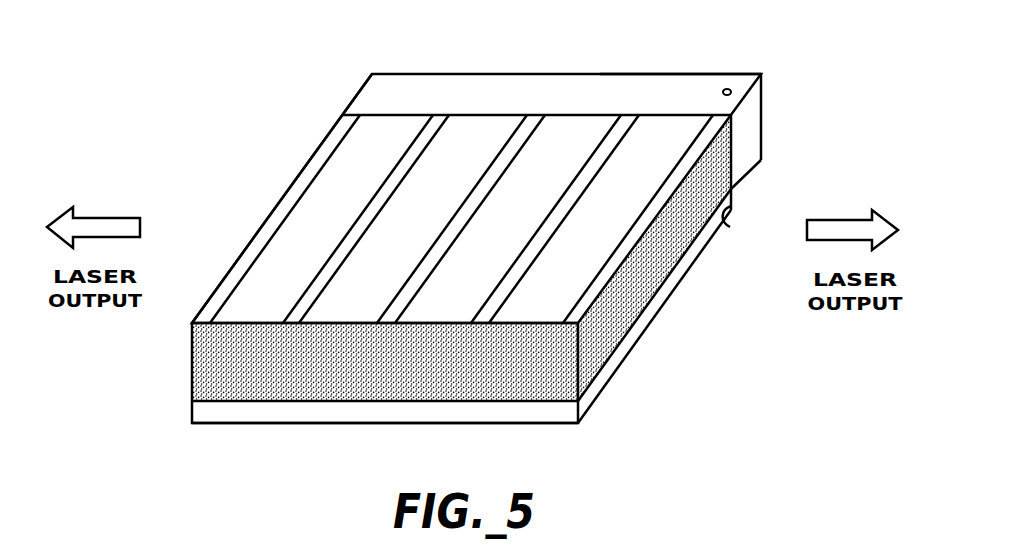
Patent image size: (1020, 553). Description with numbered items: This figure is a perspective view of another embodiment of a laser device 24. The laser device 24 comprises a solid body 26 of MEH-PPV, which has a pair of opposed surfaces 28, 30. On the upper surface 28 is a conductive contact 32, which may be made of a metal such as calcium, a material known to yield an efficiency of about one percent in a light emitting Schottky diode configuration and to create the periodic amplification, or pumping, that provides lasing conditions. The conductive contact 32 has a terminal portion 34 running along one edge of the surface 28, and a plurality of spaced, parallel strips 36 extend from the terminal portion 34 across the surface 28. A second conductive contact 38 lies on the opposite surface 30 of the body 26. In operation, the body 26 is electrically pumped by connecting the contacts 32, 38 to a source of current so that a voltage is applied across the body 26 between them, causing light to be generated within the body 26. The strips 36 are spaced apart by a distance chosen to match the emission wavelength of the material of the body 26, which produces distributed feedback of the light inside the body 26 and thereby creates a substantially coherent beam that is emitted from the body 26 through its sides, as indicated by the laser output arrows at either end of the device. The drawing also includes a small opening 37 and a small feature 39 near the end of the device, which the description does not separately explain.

The laser device 24 is at (797, 84).
The solid body 26 is at (653, 287).
The surface 28 is at (673, 83).
The surface 30 is at (222, 402).
The conductive contact 32 is at (338, 125).
The terminal portion 34 is at (553, 85).
The strips 36 is at (427, 268).
The aperture 37 is at (728, 88).
The conductive contact 38 is at (265, 415).
The contact 39 is at (726, 226).